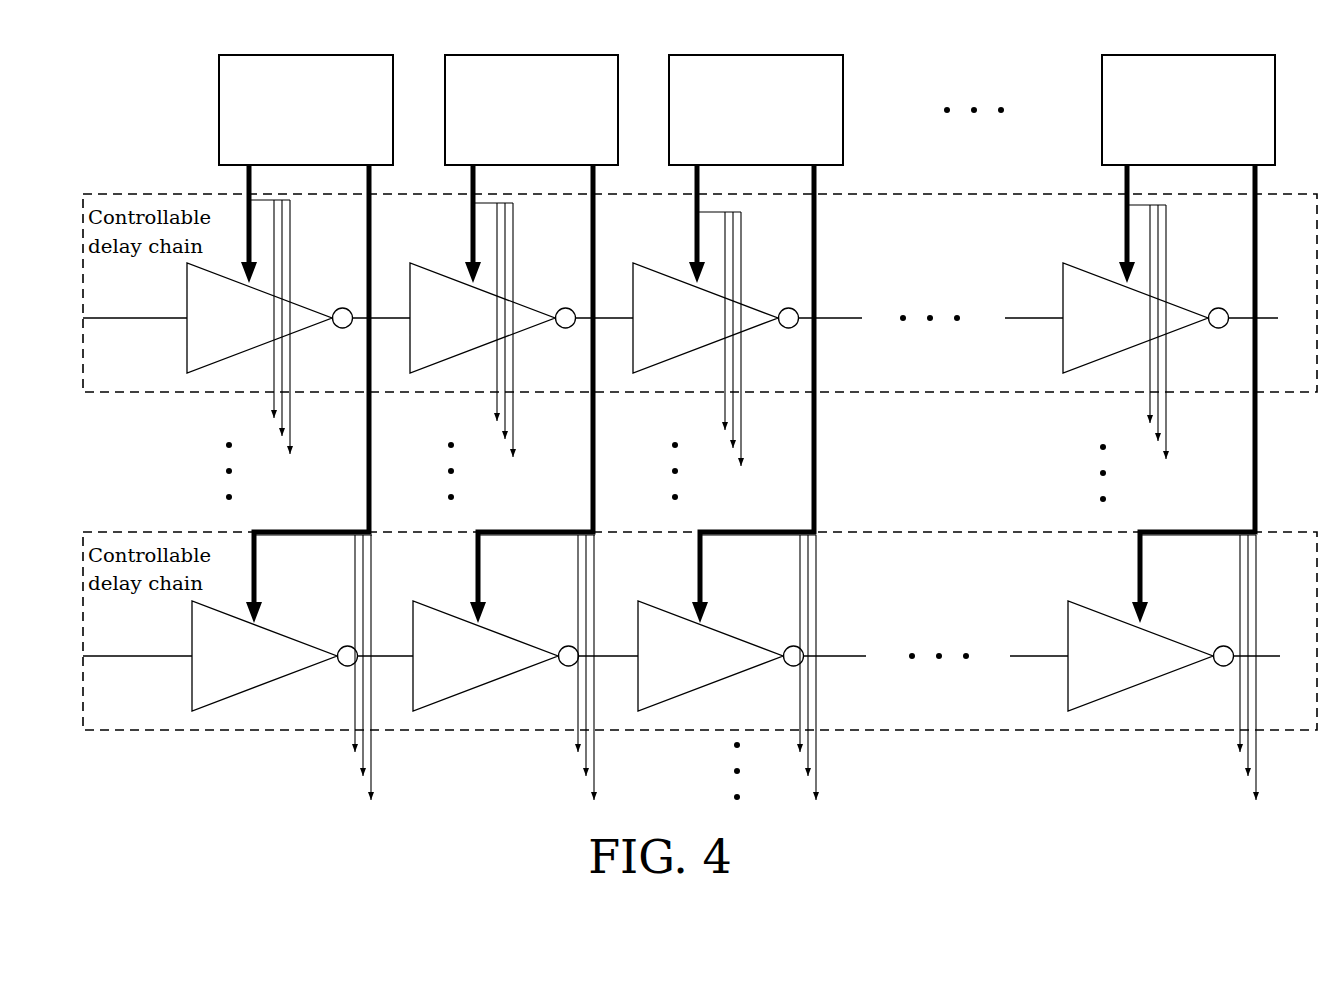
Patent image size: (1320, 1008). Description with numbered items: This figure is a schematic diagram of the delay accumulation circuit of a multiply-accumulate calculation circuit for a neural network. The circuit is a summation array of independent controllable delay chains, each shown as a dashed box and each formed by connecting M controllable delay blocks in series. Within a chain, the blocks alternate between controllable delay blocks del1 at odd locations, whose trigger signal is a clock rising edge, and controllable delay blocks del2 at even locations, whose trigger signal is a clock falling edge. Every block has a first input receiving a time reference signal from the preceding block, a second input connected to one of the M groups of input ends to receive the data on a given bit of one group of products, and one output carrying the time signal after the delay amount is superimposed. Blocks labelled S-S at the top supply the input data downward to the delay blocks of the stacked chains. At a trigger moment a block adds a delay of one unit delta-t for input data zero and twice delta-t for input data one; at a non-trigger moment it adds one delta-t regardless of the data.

The shift register / serial-to-serial stage S-S is at (747, 110).
The controllable delay block at odd location del1 is at (495, 487).
The controllable delay block at even location del2 is at (822, 487).